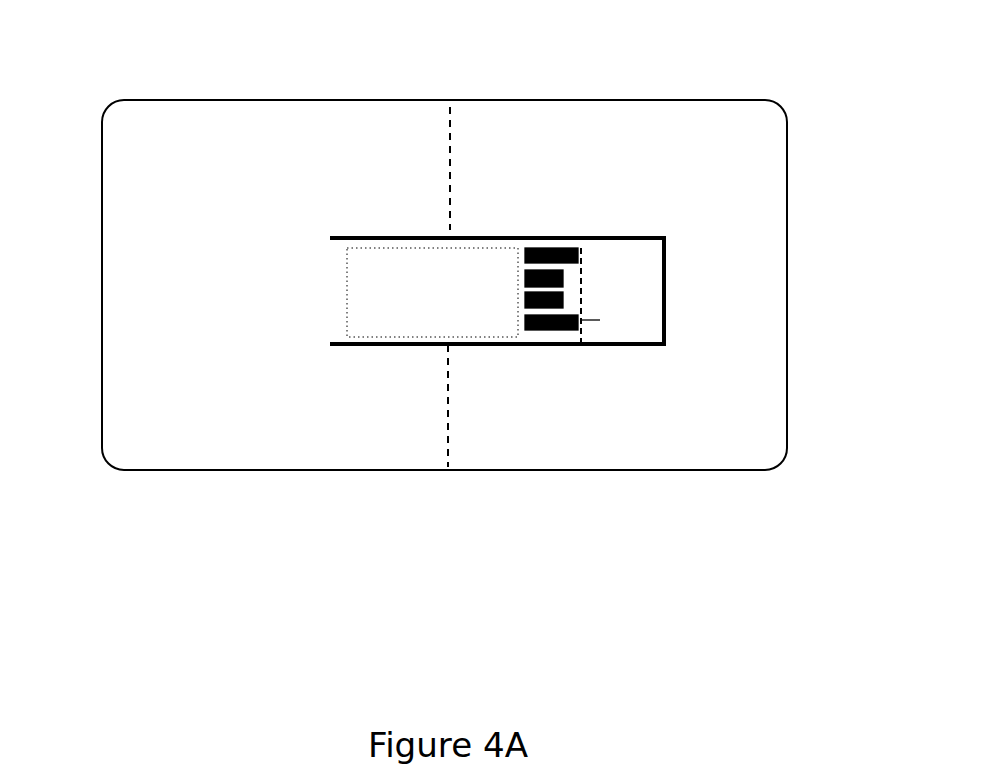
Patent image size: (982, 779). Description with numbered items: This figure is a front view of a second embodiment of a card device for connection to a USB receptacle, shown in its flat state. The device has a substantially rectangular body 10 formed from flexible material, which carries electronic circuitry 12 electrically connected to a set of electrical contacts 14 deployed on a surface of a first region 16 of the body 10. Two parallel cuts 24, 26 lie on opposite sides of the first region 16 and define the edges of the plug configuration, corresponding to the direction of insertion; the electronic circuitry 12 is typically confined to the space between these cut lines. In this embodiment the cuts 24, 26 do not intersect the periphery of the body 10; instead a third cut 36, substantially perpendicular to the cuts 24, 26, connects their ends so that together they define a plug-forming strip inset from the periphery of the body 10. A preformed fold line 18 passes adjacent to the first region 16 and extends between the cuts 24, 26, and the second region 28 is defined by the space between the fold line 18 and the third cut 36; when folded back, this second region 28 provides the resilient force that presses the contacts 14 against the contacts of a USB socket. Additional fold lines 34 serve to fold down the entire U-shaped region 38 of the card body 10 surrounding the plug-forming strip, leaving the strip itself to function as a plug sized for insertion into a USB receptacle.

The body 10 is at (256, 100).
The electronic circuitry 12 is at (392, 320).
The electrical contacts 14 is at (558, 248).
The first region 16 is at (563, 243).
The preformed fold line 18 is at (582, 320).
The cut 24 is at (493, 238).
The cut 26 is at (594, 345).
The second region 28 is at (622, 258).
The fold lines 34 is at (450, 155).
The third cut 36 is at (665, 273).
The U-shaped region 38 is at (647, 453).